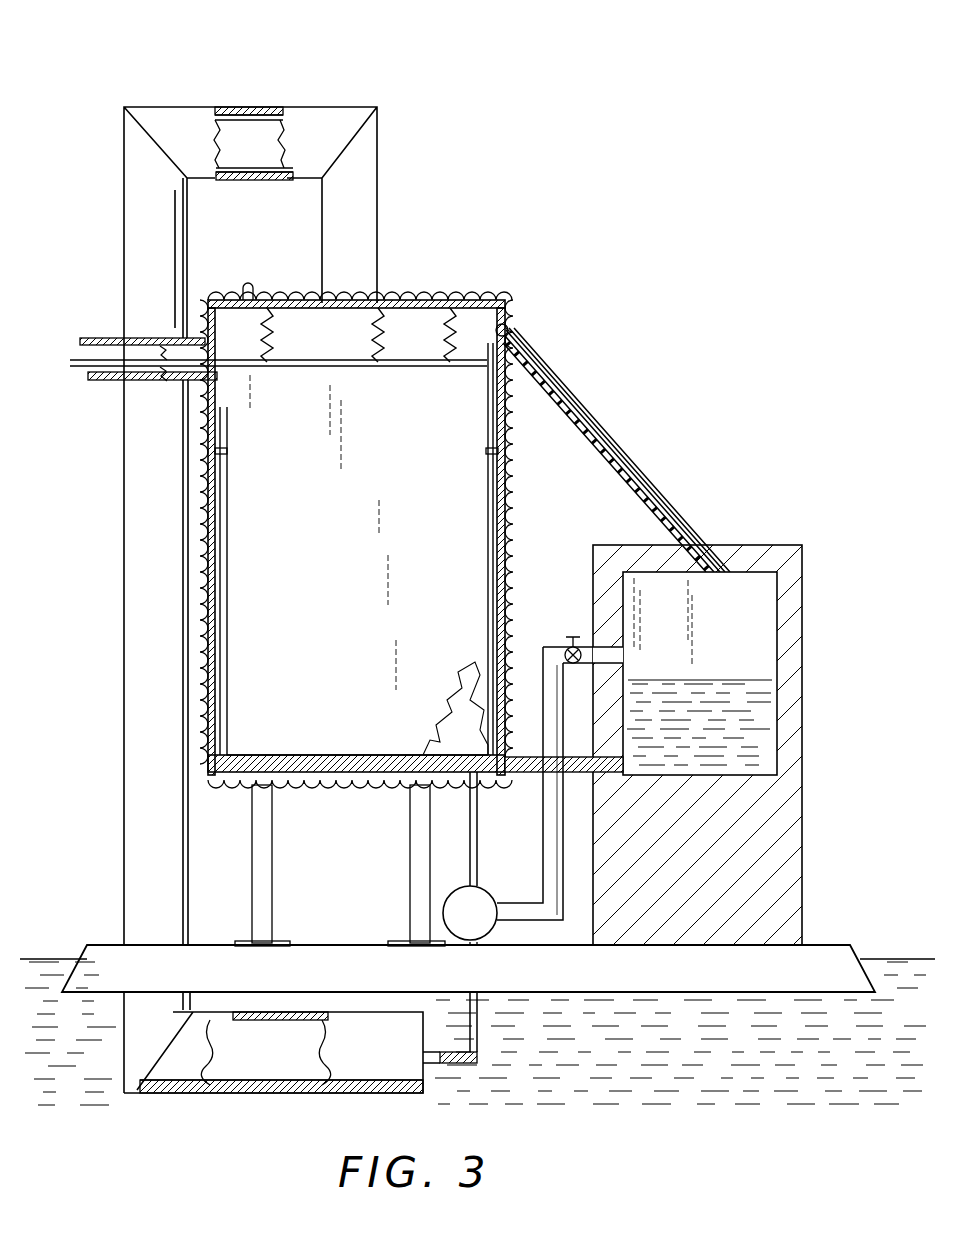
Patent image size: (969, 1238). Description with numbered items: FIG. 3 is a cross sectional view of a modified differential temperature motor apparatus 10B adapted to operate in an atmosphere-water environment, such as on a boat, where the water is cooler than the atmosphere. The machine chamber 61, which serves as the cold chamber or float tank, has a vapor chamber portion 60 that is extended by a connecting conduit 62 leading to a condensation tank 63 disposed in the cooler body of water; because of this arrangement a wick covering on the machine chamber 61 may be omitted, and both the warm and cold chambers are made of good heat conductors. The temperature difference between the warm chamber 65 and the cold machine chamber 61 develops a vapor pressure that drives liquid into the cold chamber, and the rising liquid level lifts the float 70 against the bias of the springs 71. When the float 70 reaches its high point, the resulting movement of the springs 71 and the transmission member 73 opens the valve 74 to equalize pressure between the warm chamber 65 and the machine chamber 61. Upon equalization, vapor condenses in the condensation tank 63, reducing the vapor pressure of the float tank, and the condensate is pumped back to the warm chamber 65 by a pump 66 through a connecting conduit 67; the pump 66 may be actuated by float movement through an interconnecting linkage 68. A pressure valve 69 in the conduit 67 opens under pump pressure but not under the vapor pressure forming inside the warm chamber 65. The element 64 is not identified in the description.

The differential temperature motor apparatus 10B is at (560, 70).
The connecting conduit 62 is at (380, 136).
The vapor chamber portion 60 is at (504, 481).
The machine chamber 61 is at (508, 507).
The float 70 is at (348, 529).
The springs 71 is at (276, 348).
The transmission member 73 is at (140, 382).
The valve 74 is at (508, 326).
The warm chamber 65 is at (802, 633).
The pressure valve 69 is at (572, 640).
The connecting conduit 67 is at (543, 848).
The interconnecting linkage 68 is at (478, 802).
The pump 66 is at (480, 899).
The platform 64 is at (874, 960).
The condensation tank 63 is at (398, 1095).